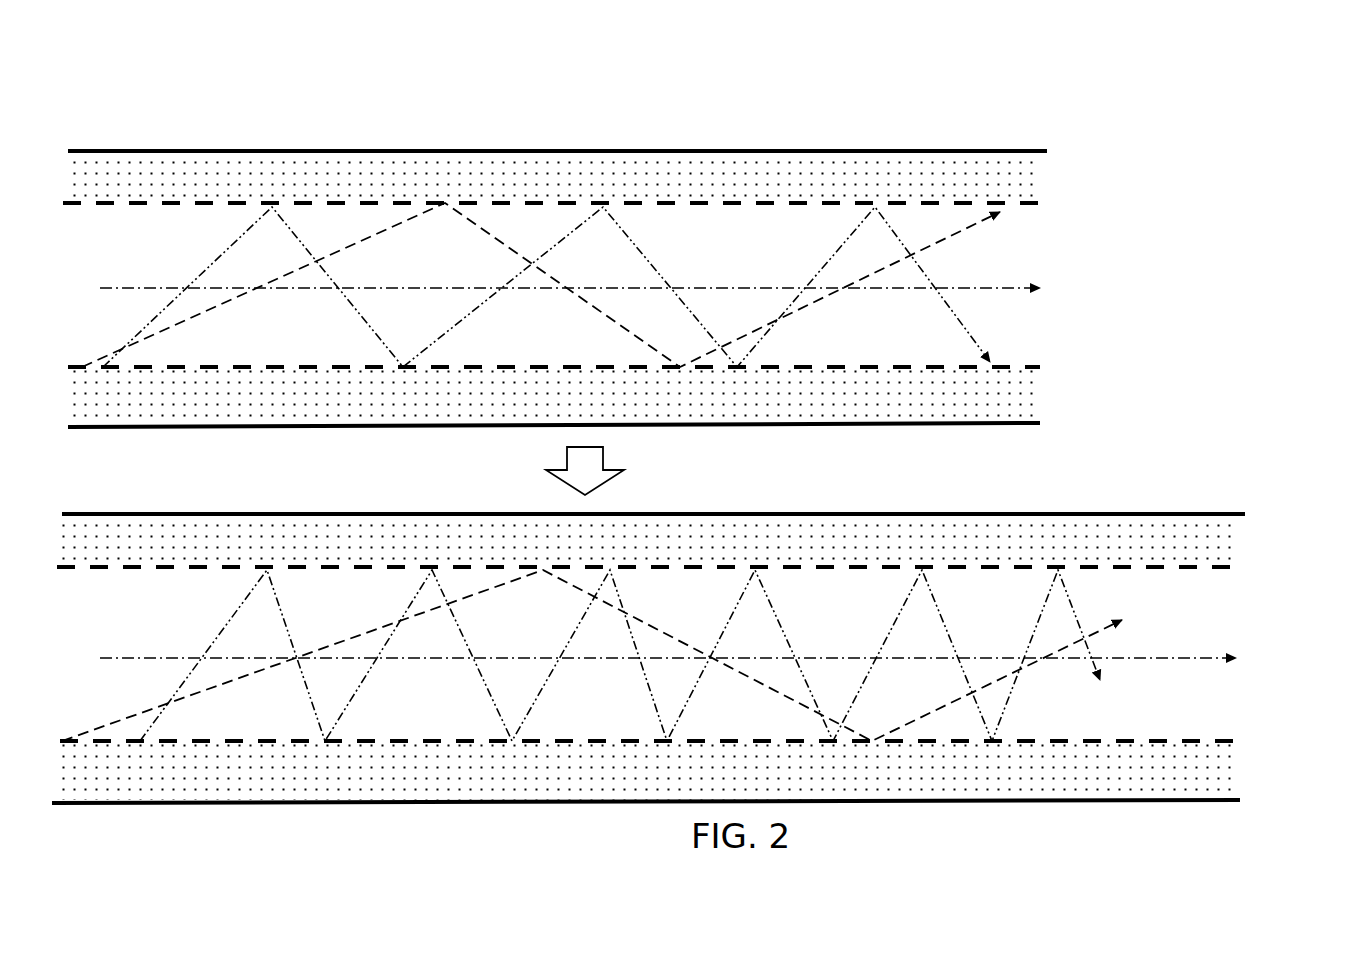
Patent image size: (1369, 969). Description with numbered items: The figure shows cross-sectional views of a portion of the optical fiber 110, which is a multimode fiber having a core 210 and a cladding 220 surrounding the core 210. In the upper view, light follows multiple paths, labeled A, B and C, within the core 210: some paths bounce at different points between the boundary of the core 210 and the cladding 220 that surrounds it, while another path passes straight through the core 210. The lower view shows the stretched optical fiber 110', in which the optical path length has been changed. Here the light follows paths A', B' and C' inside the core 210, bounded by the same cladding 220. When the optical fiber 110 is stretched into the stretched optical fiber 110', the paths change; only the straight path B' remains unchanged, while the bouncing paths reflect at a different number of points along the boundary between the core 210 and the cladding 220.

The optical fiber 110 is at (649, 252).
The stretched optical fiber 110' is at (701, 591).
The core 210 is at (200, 223).
The cladding 220 is at (128, 170).